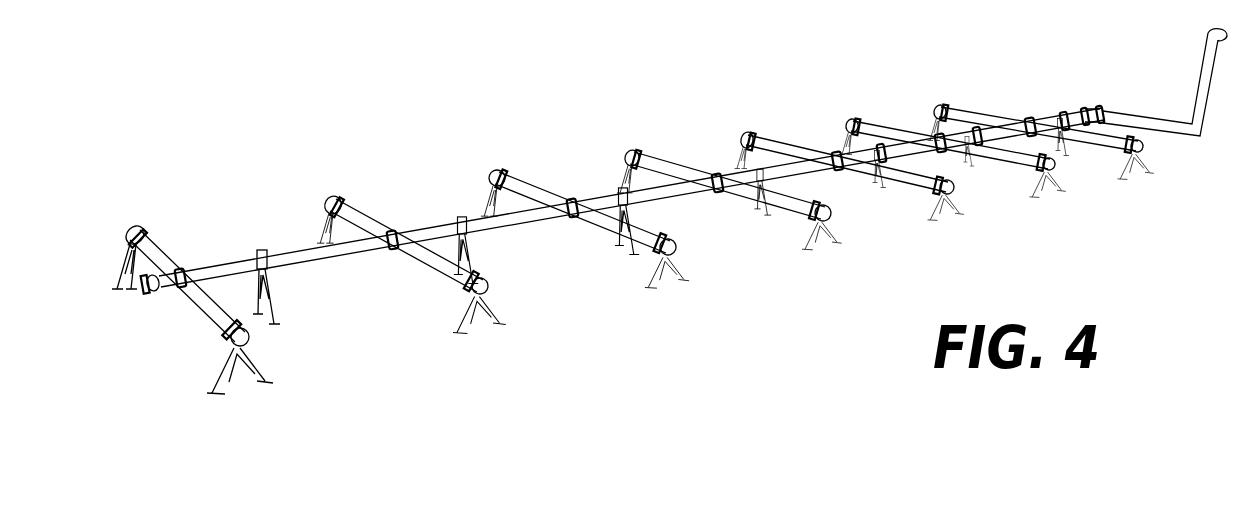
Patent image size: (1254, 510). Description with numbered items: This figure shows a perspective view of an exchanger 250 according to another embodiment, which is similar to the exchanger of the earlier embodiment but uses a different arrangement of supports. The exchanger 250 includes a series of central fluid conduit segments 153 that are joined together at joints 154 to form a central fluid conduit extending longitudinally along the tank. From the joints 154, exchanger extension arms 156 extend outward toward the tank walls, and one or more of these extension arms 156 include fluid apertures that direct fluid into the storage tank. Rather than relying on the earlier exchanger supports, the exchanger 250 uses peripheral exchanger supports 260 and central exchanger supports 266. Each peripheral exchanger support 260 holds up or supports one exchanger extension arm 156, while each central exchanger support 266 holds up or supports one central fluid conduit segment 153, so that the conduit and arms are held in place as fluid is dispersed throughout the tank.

The exchanger 250 is at (168, 145).
The central fluid conduit segments 153 is at (494, 226).
The joints 154 is at (715, 188).
The exchanger extension arms 156 is at (428, 267).
The peripheral exchanger supports 260 is at (682, 263).
The central exchanger supports 266 is at (272, 302).